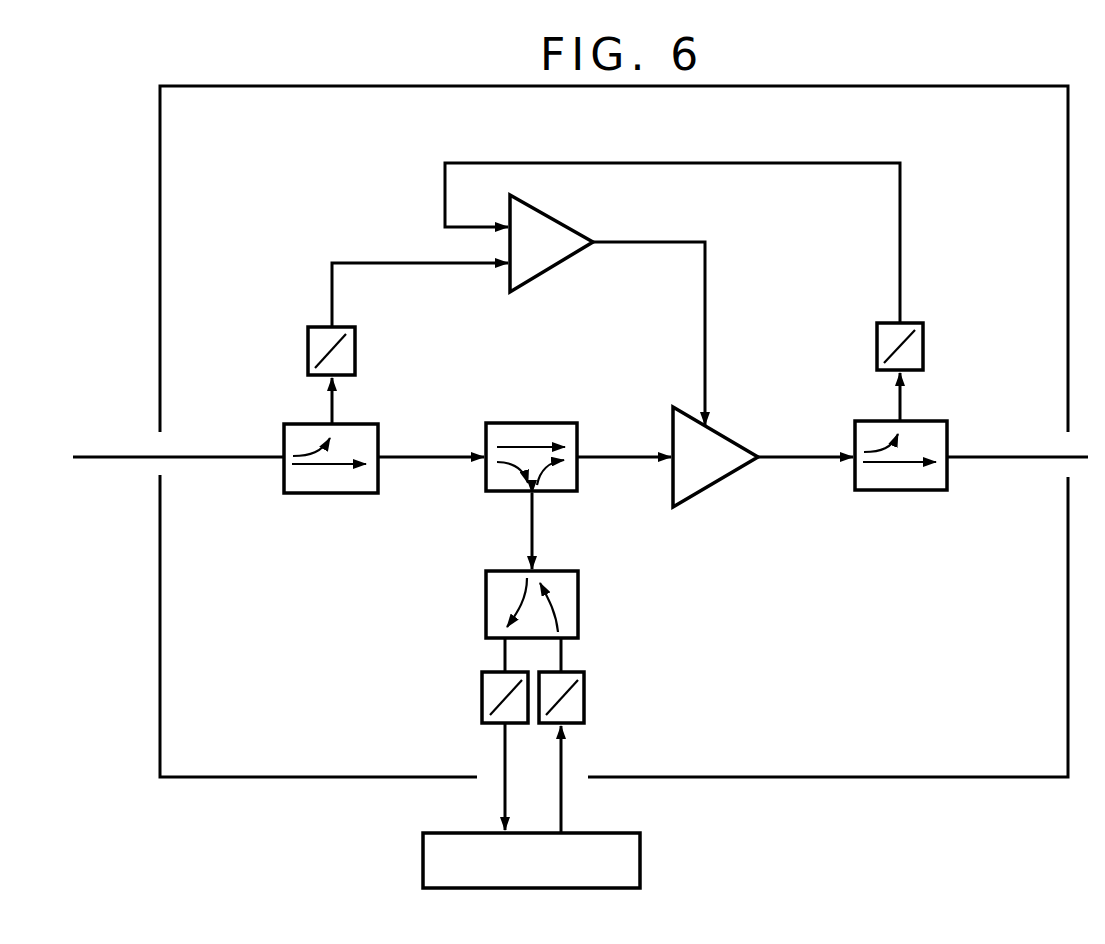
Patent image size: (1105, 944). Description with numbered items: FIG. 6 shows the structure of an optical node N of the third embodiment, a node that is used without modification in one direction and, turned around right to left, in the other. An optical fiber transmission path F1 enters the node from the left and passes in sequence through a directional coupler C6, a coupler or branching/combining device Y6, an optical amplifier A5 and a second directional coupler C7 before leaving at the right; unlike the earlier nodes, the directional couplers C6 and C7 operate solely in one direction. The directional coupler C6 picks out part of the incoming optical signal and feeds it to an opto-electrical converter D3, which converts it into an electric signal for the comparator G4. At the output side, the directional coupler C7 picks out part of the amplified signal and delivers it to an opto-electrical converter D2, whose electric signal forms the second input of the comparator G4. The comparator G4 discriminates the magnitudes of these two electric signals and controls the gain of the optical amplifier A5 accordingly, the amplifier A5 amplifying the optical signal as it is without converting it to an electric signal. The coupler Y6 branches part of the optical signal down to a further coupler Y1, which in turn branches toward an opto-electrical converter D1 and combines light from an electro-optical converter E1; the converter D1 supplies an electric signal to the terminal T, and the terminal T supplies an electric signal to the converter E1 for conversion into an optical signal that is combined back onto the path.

The terminal N is at (1030, 86).
The optical fiber transmission path F1 is at (98, 455).
The directional coupler C6 is at (327, 495).
The opto-electrical converter D3 is at (355, 336).
The comparator G4 is at (553, 272).
The coupler or branching/combining device Y6 is at (520, 423).
The optical amplifier A5 is at (735, 421).
The directional coupler C7 is at (908, 492).
The opto-electrical converter D2 is at (923, 330).
The coupler or branching/combining device Y1 is at (580, 601).
The opto-electrical converter D1 is at (480, 691).
The electro-optical converter E1 is at (585, 700).
The terminal T is at (640, 855).